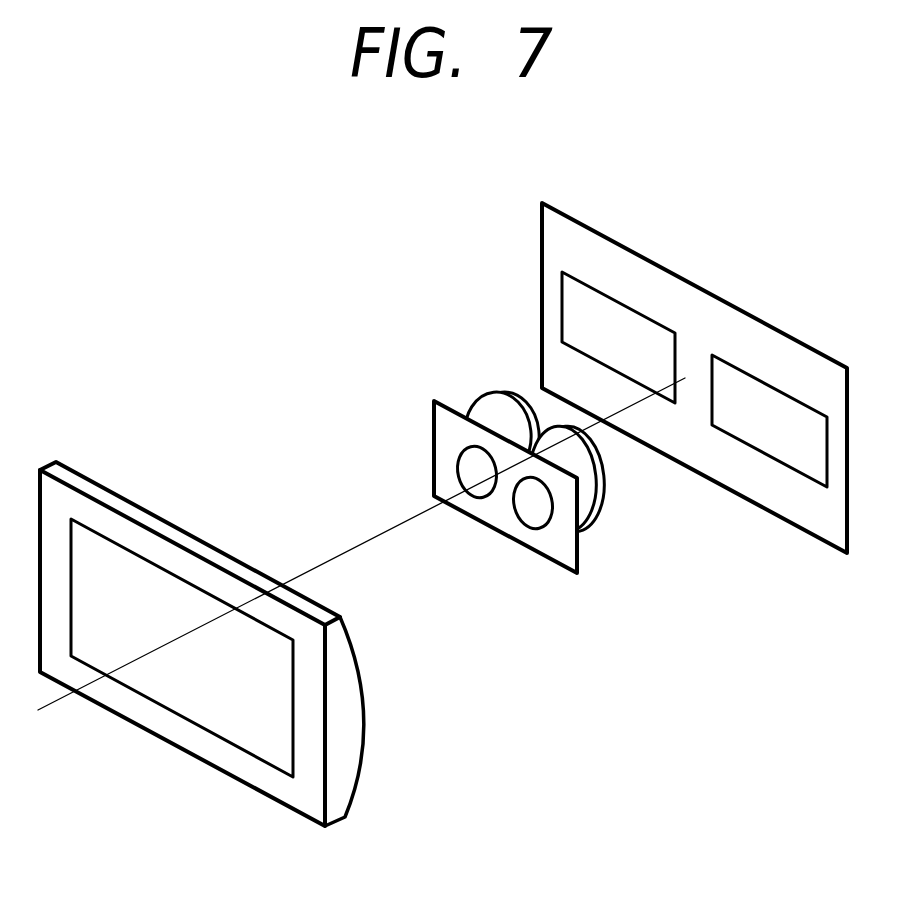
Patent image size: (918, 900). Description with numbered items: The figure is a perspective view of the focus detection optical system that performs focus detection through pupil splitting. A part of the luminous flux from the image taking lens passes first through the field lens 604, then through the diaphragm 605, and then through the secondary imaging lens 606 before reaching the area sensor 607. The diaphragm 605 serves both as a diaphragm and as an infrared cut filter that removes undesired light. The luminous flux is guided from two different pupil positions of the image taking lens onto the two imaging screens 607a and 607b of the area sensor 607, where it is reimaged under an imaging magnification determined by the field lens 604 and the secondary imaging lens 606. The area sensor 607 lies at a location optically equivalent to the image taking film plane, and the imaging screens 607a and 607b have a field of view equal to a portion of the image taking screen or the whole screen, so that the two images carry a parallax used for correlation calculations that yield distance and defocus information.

The field lens 604 is at (367, 730).
The diaphragm 605 is at (577, 553).
The secondary imaging lens 606 is at (605, 490).
The area sensor 607 is at (775, 517).
The imaging screen 607a is at (620, 303).
The imaging screen 607b is at (773, 386).